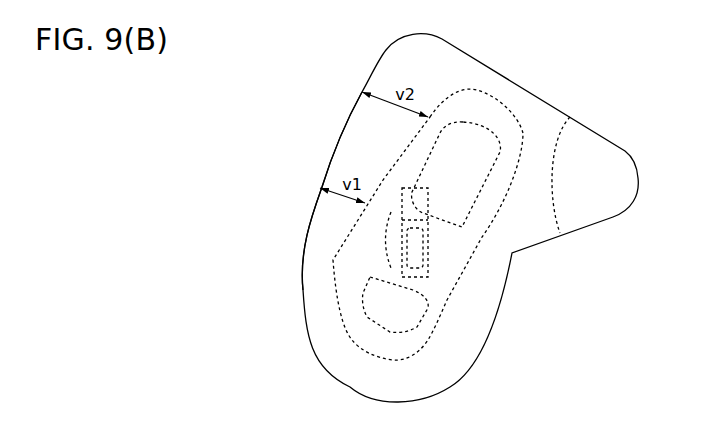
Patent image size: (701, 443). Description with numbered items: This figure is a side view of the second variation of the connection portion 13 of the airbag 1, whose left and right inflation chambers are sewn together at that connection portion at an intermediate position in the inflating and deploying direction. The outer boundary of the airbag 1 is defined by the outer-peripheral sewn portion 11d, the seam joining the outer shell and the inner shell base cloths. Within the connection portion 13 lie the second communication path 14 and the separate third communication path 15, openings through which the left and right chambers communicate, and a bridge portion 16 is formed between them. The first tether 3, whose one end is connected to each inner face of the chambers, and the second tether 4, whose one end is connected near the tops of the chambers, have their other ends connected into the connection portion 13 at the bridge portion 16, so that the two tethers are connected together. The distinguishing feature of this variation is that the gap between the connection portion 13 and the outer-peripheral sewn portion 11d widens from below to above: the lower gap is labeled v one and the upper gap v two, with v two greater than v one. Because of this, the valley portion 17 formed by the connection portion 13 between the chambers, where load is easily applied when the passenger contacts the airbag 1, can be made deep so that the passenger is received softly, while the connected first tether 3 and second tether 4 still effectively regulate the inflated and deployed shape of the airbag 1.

The airbag 1 is at (307, 122).
The first tether 3 is at (387, 252).
The second tether 4 is at (428, 197).
The outer-peripheral sewn portion 11d is at (308, 215).
The connection portion 13 is at (417, 140).
The second communication path 14 is at (446, 175).
The third communication path 15 is at (381, 315).
The bridge portion 16 is at (438, 247).
The valley portion 17 is at (388, 72).